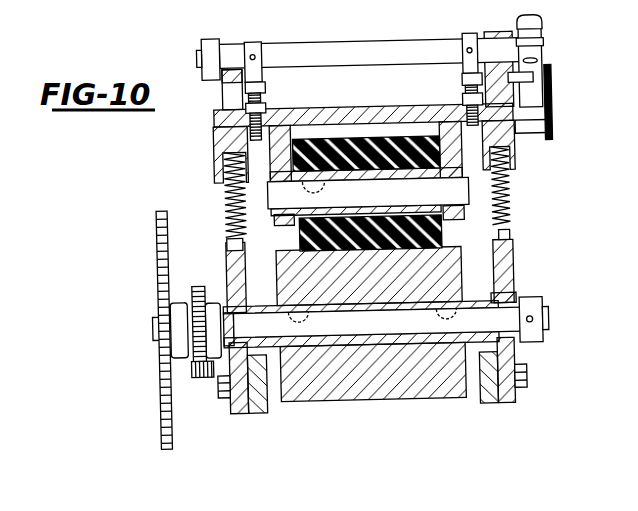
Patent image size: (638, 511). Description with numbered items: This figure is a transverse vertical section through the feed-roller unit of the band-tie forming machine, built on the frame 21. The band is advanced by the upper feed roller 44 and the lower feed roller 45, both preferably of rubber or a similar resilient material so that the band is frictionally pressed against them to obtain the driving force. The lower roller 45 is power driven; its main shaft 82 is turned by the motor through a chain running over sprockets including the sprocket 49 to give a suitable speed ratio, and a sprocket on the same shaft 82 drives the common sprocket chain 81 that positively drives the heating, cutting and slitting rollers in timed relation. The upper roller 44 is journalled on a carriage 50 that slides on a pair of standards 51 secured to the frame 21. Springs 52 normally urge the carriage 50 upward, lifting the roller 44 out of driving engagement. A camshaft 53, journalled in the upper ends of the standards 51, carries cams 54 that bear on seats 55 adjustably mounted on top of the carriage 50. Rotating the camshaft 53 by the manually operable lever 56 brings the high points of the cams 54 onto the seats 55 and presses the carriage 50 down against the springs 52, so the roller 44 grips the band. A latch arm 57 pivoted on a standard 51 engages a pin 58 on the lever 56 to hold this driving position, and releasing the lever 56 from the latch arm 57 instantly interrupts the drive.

The frame 21 is at (247, 422).
The upper feed roller 44 is at (445, 241).
The lower feed roller 45 is at (342, 398).
The sprocket 49 is at (157, 254).
The carriage 50 is at (411, 108).
The standards 51 is at (233, 45).
The springs 52 is at (227, 202).
The camshaft 53 is at (352, 57).
The cams 54 is at (268, 72).
The seats 55 is at (271, 85).
The lever 56 is at (542, 103).
The latch arm 57 is at (557, 92).
The pin 58 is at (557, 73).
The sprocket chain 81 is at (201, 374).
The main shaft 82 is at (152, 330).